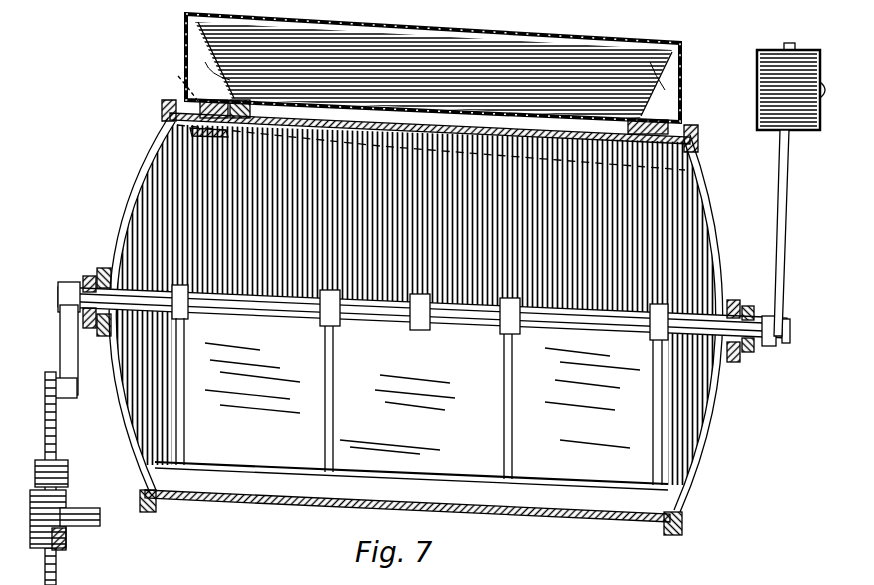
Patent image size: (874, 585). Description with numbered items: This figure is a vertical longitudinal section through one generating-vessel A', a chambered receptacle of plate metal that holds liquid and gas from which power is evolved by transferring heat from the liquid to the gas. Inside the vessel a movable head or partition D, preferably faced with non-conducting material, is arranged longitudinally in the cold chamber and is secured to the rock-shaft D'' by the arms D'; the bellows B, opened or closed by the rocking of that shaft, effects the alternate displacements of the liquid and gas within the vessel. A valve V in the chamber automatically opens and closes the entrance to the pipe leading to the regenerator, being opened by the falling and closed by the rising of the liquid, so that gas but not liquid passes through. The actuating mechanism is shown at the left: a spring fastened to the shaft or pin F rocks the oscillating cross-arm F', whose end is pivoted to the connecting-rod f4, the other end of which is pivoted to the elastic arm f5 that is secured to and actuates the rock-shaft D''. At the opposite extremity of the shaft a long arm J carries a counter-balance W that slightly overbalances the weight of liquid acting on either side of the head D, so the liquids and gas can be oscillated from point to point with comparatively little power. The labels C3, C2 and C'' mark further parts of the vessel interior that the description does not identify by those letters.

The generating-vessel A' is at (448, 317).
The bellows B is at (433, 71).
The hopper gate lever C3 is at (176, 84).
The valve V is at (216, 136).
The partition plate C2 is at (431, 147).
The drum casing C'' is at (414, 222).
The rock-shaft D'' is at (408, 315).
The arms D' is at (419, 401).
The movable head or partition D is at (397, 414).
The counter-balance W is at (776, 86).
The long arm J is at (769, 233).
The elastic arm f5 is at (53, 351).
The connecting-rod f4 is at (56, 422).
The oscillating cross-arm F' is at (61, 473).
The shaft or pin F is at (65, 522).